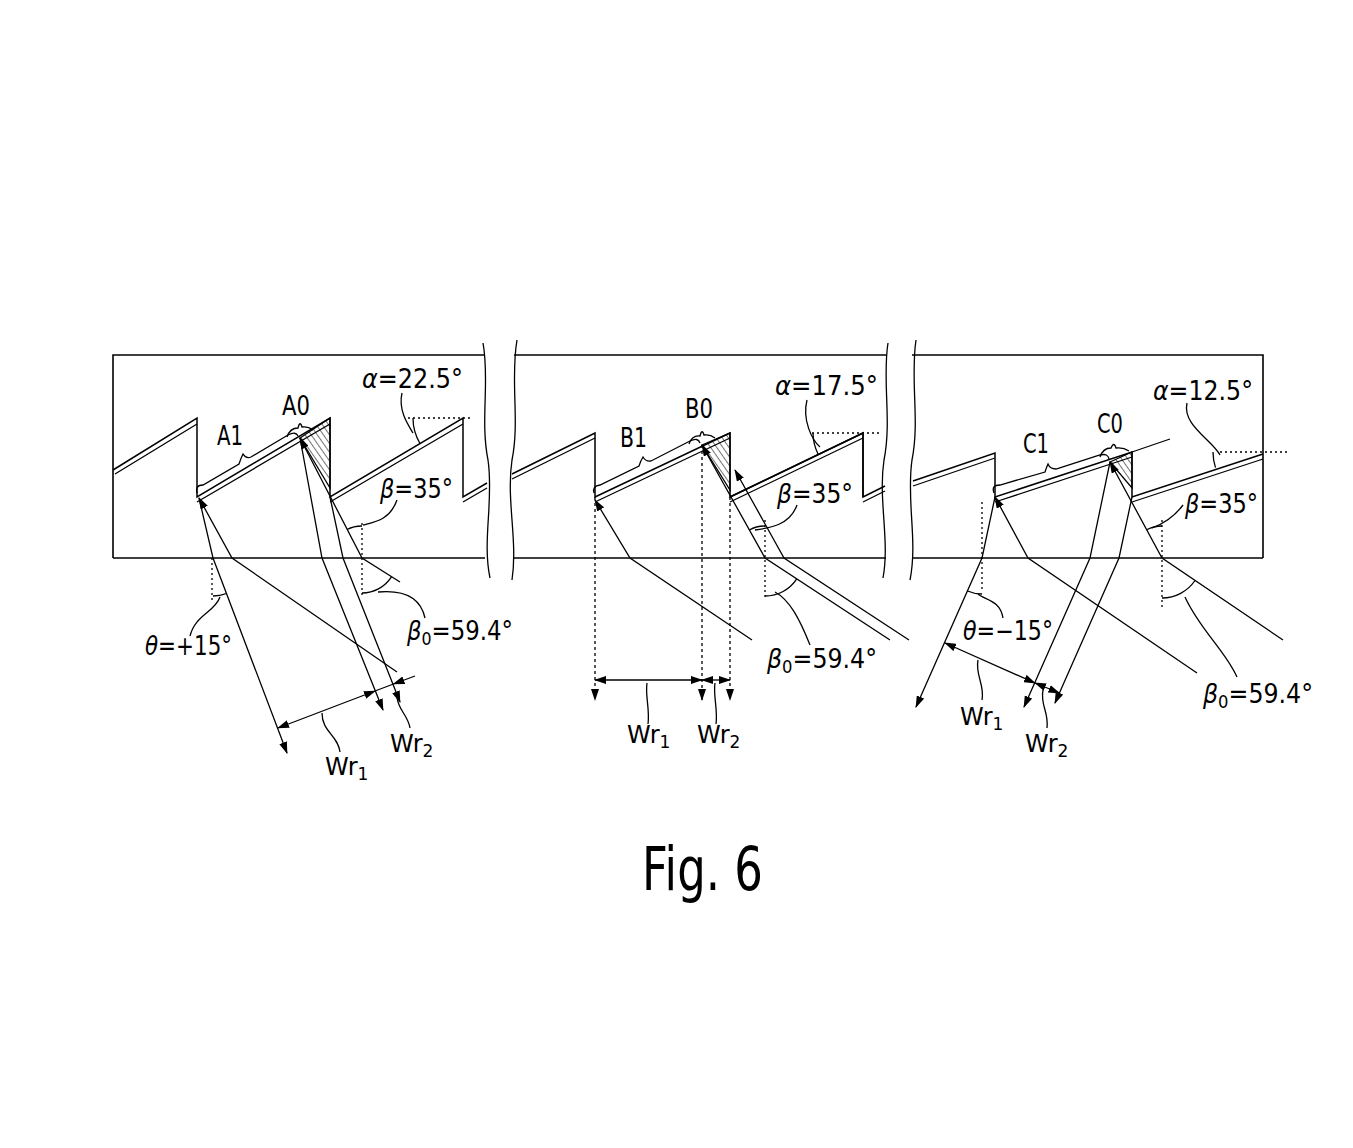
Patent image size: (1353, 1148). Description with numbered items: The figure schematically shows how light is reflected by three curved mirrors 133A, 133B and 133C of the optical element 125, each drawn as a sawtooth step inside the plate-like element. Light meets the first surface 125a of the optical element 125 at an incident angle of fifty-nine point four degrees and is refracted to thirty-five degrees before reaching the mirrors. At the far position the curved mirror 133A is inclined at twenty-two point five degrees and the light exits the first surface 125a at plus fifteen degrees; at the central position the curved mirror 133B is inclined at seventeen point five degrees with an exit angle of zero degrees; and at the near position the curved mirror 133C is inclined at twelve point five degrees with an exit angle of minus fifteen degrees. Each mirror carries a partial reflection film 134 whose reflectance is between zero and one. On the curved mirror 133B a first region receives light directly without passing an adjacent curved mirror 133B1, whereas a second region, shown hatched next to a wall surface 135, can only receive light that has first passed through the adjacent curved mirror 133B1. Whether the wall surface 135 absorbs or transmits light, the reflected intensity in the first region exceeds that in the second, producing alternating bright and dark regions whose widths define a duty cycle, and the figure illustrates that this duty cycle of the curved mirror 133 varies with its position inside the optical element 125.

The optical element 125 is at (677, 356).
The first surface 125a is at (133, 560).
The curved mirror 133 is at (688, 372).
The curved mirror 133A is at (322, 386).
The curved mirror 133B is at (680, 382).
The adjacent curved mirror 133B1 is at (766, 440).
The curved mirror 133C is at (1005, 442).
The partial reflection film 134 is at (144, 455).
The wall surface 135 is at (733, 452).